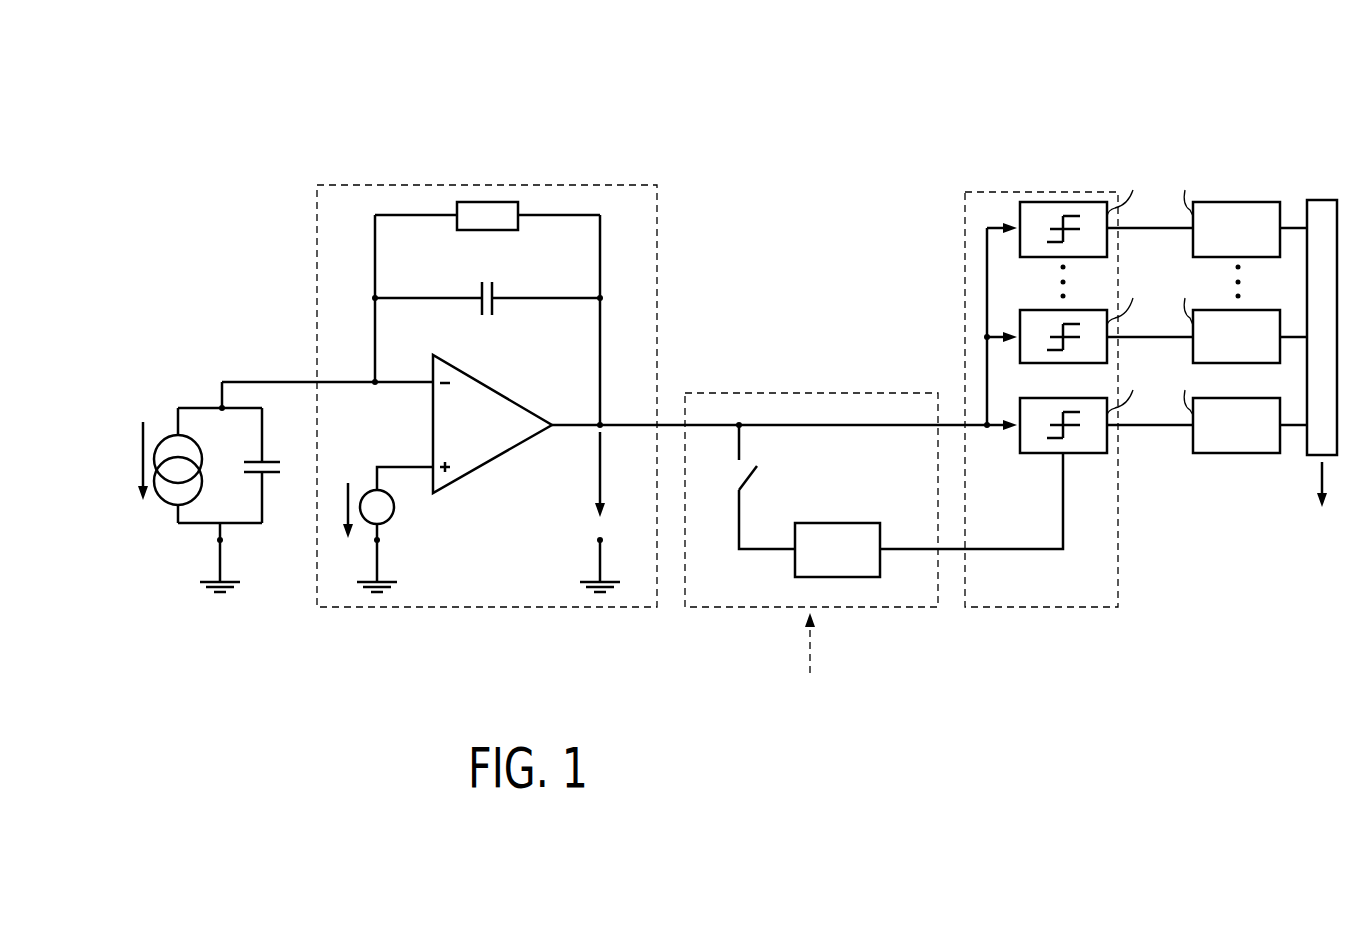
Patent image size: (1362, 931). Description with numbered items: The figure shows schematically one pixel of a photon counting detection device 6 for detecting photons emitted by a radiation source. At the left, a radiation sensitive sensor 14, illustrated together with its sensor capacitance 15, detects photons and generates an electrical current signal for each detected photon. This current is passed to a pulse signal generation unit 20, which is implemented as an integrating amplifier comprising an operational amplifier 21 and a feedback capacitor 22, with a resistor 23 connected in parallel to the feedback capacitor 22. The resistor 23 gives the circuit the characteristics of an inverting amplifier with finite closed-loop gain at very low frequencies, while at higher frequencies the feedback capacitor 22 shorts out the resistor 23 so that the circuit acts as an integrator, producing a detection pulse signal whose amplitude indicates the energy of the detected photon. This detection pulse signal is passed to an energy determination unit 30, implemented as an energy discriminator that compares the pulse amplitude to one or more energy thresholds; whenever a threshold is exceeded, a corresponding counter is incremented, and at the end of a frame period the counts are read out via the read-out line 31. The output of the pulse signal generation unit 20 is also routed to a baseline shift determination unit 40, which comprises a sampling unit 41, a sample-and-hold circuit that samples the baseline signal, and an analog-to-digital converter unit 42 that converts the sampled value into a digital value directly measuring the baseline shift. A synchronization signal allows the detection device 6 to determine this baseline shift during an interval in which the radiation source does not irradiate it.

The detection device 6 is at (720, 113).
The radiation sensitive sensor 14 is at (171, 377).
The sensor capacitance 15 is at (281, 493).
The pulse signal generation unit 20 is at (657, 255).
The operational amplifier 21 is at (512, 480).
The feedback capacitor 22 is at (512, 330).
The resistor 23 is at (538, 190).
The energy determination unit 30 is at (965, 294).
The read-out line 31 is at (1322, 200).
The baseline shift determination unit 40 is at (793, 393).
The sampling unit 41 is at (726, 505).
The analog-to-digital converter unit 42 is at (881, 600).